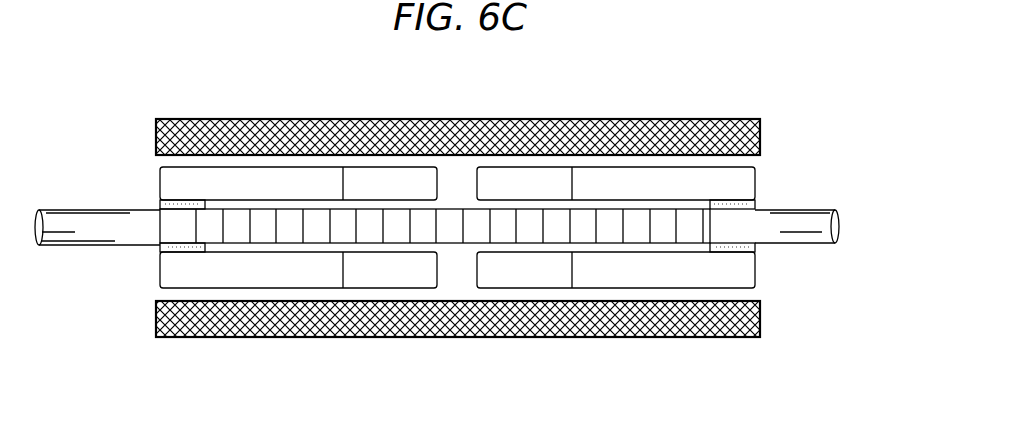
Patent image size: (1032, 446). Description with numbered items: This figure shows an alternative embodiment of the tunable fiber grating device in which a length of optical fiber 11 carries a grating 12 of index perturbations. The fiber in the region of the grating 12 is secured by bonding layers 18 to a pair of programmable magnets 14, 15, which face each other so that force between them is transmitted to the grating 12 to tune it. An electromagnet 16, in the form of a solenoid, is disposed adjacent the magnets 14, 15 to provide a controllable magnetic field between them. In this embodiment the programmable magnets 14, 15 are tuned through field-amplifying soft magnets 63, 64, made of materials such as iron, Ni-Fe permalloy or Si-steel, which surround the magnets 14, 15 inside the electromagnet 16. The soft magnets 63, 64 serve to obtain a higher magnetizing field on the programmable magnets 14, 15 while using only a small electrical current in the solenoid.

The optical fiber 11 is at (843, 228).
The grating 12 is at (451, 245).
The programmable magnet 14 is at (381, 167).
The programmable magnet 15 is at (515, 167).
The electromagnet 16 is at (632, 120).
The bonding layer 18 is at (158, 250).
The field-amplifying soft magnet 63 is at (160, 185).
The field-amplifying soft magnet 64 is at (755, 183).